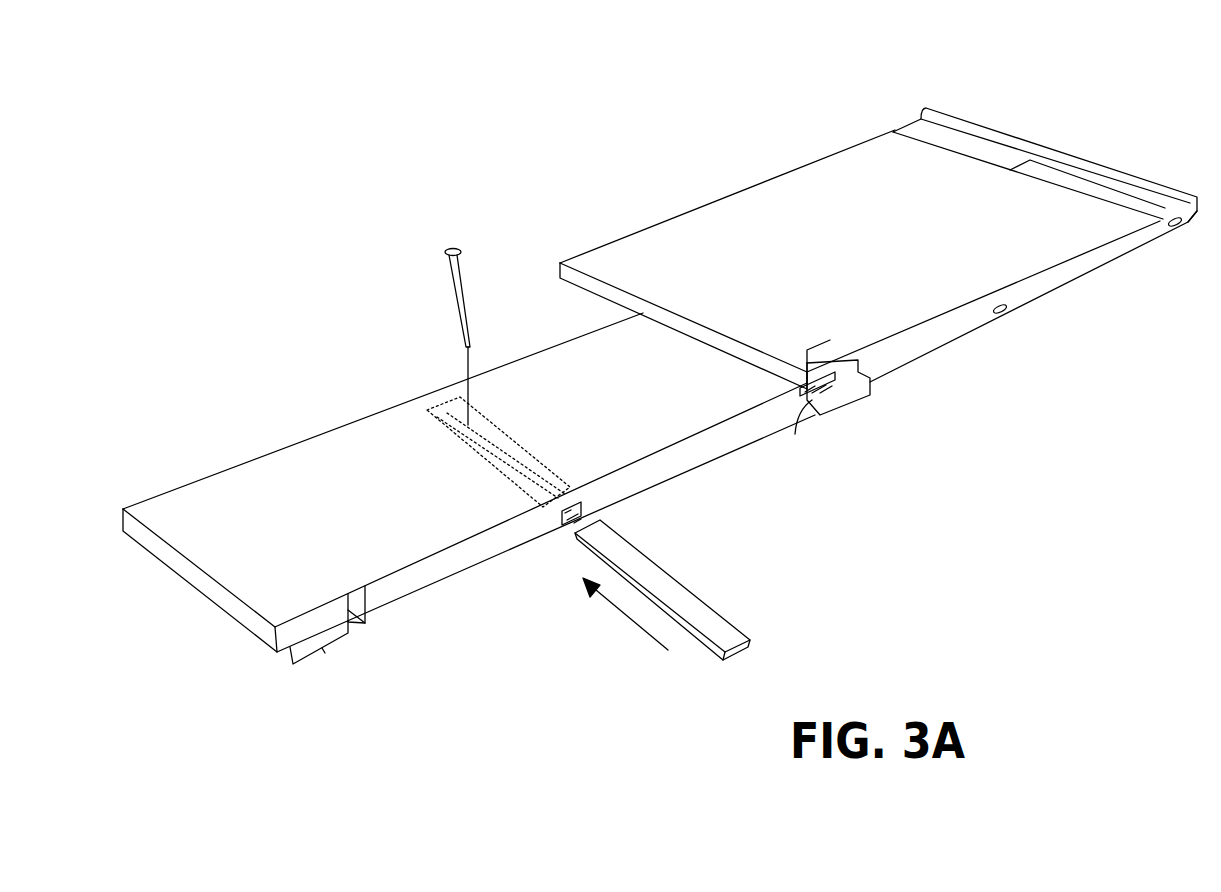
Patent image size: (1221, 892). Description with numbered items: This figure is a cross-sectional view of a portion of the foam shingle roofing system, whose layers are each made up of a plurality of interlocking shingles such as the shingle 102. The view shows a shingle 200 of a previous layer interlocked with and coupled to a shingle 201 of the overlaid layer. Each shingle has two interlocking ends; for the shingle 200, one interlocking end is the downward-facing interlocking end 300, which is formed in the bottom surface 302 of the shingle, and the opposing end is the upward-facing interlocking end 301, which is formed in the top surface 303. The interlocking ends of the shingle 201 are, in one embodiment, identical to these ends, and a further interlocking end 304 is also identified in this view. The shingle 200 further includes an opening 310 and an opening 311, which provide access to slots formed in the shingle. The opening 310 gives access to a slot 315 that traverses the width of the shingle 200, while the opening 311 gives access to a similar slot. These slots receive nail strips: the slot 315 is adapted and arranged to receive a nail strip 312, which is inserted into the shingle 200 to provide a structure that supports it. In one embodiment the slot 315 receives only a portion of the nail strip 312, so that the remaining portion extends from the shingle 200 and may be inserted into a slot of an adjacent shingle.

The interlocking shingle 102 is at (777, 262).
The shingle 201 is at (912, 237).
The shingle 200 is at (345, 523).
The downward-facing interlocking end 300 is at (327, 661).
The upward-facing interlocking end 301 is at (840, 398).
The bottom surface 302 is at (393, 614).
The top surface 303 is at (357, 430).
The interlocking end 304 is at (830, 340).
The opening 310 is at (573, 505).
The opening 311 is at (797, 433).
The nail strip 312 is at (808, 388).
The slot 315 is at (527, 462).